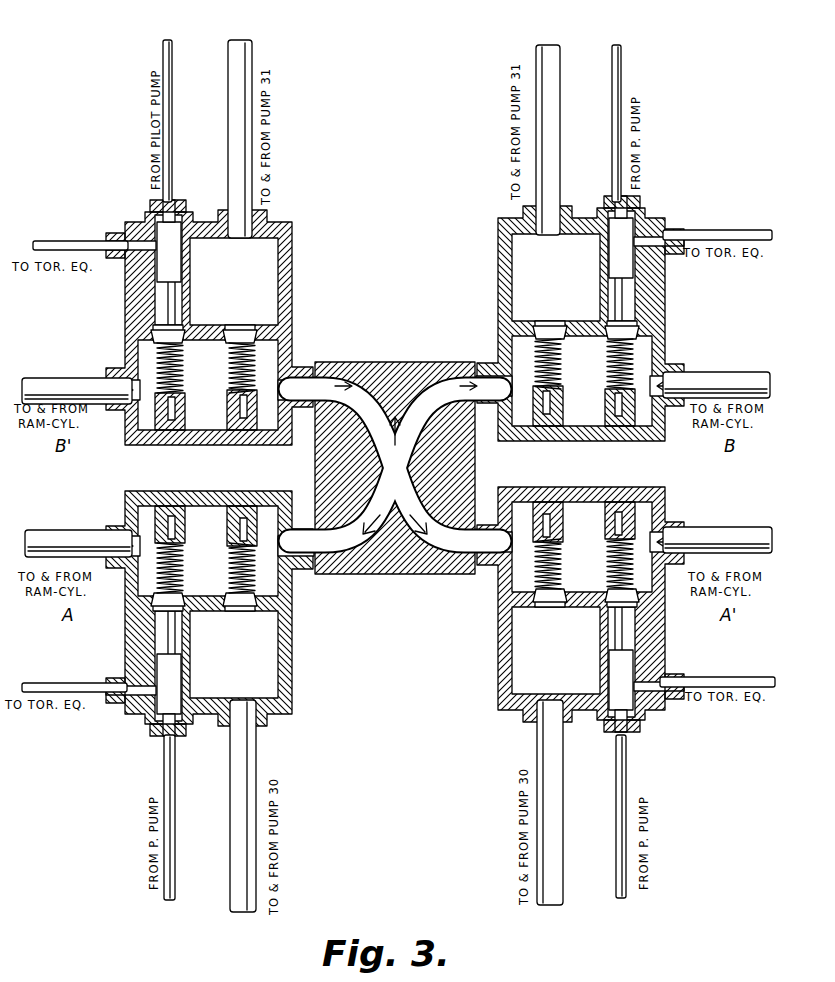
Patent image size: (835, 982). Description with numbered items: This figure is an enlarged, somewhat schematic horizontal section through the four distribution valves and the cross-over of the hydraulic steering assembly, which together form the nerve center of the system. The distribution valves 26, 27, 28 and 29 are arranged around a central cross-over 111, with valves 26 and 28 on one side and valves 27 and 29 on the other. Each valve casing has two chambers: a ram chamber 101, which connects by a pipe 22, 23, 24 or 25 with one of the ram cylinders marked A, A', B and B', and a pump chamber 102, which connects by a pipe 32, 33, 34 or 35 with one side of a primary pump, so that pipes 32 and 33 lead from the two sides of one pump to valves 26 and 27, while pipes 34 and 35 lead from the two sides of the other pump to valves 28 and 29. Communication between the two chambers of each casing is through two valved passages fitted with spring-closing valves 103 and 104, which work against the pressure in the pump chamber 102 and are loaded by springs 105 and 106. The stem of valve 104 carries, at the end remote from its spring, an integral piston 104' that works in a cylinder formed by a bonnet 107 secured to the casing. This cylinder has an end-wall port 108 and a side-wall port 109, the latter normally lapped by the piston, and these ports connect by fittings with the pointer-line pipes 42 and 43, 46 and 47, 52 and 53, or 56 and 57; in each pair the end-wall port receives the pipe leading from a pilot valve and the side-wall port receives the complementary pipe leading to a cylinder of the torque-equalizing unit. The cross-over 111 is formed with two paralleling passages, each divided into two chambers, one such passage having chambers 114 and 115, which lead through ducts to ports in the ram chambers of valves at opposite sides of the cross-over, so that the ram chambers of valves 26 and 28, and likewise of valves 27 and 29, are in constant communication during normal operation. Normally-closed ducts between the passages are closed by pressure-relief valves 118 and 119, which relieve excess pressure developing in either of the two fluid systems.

The pipe 22 is at (50, 530).
The pipe 23 is at (728, 529).
The pipe 24 is at (728, 373).
The pipe 25 is at (55, 378).
The distribution valve 26 is at (306, 653).
The distribution valve 27 is at (492, 653).
The distribution valve 28 is at (492, 300).
The distribution valve 29 is at (296, 315).
The pipe 32 is at (240, 855).
The pipe 33 is at (554, 848).
The pipe 34 is at (556, 148).
The pipe 35 is at (240, 103).
The pointer-line pipe 42 is at (620, 808).
The pointer-line pipe 43 is at (735, 678).
The pointer-line pipe 46 is at (171, 800).
The pointer-line pipe 47 is at (72, 684).
The pointer-line pipe 52 is at (172, 143).
The pointer-line pipe 53 is at (64, 242).
The pointer-line pipe 56 is at (615, 92).
The pointer-line pipe 57 is at (720, 231).
The ram chamber 101 is at (215, 446).
The pump chamber 102 is at (265, 258).
The valve 103 is at (285, 596).
The valve 104 is at (395, 602).
The piston 104' is at (395, 689).
The spring 105 is at (262, 356).
The spring 106 is at (158, 353).
The bonnet 107 is at (178, 206).
The end-wall port 108 is at (152, 218).
The side-wall port 109 is at (124, 262).
The cross-over 111 is at (419, 352).
The passage chamber 114 is at (463, 550).
The passage chamber 115 is at (337, 384).
The pressure-relief valve 118 is at (335, 551).
The pressure-relief valve 119 is at (463, 384).